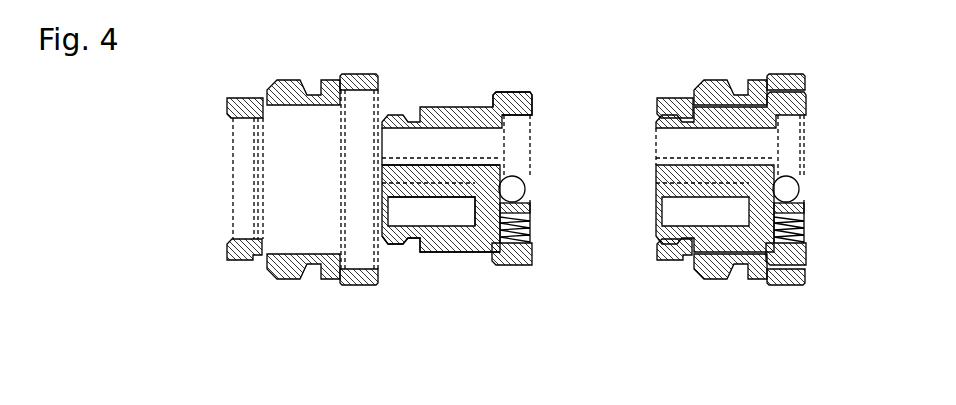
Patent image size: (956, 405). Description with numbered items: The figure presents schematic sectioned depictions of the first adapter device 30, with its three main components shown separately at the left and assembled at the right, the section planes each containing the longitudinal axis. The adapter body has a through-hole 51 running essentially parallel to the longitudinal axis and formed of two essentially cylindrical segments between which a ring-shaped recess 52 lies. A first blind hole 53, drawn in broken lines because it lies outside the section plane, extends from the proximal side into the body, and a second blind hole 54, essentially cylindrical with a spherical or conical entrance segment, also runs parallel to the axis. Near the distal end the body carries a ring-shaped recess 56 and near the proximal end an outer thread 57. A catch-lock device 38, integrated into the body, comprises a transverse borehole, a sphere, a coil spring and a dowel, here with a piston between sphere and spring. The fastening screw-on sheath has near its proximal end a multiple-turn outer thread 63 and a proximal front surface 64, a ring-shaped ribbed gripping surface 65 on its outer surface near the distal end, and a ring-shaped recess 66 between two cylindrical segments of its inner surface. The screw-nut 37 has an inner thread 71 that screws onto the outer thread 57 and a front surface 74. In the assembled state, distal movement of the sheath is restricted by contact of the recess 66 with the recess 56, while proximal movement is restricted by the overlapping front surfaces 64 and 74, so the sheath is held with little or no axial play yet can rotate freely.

The first adapter device 30 is at (701, 152).
The screw-nut 37 is at (237, 260).
The catch-lock device 38 is at (527, 264).
The through-hole 51 is at (476, 180).
The ring-shaped recess 52 is at (507, 122).
The first blind hole 53 is at (707, 164).
The second blind hole 54 is at (443, 216).
The ring-shaped recess 56 is at (492, 94).
The outer thread 57 is at (399, 244).
The outer thread 63 is at (284, 170).
The proximal front surface 64 is at (267, 90).
The ring-shaped ribbed gripping surface 65 is at (357, 75).
The ring-shaped recess 66 is at (380, 95).
The inner thread 71 is at (240, 238).
The front surface 74 is at (266, 118).